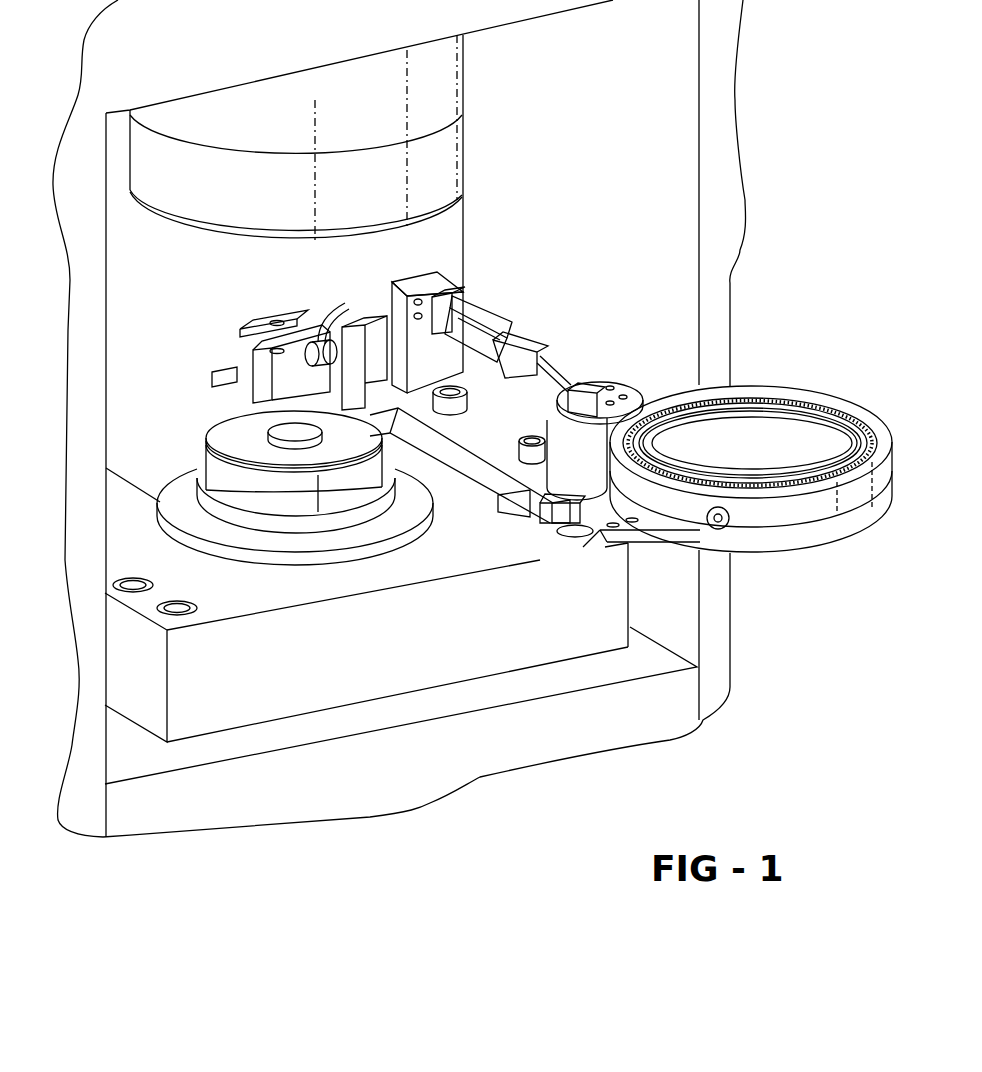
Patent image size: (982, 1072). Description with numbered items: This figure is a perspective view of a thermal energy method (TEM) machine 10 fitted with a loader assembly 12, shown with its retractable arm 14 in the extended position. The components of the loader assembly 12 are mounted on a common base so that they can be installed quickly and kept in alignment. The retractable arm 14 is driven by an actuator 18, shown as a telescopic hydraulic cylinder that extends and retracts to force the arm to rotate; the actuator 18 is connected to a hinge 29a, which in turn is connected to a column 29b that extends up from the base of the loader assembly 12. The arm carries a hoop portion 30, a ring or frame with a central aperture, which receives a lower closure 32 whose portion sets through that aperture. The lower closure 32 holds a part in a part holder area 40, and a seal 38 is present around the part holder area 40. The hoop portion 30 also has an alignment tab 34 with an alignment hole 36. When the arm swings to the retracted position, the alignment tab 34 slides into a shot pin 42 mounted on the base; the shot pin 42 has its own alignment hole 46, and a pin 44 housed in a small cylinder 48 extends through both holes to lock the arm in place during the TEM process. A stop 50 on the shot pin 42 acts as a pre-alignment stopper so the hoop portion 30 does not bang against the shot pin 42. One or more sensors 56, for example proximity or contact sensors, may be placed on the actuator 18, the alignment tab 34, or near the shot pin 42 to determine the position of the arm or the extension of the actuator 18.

The thermal energy method (TEM) machine 10 is at (822, 166).
The loader assembly 12 is at (459, 532).
The retractable arm 14 is at (587, 348).
The actuator 18 is at (500, 330).
The hinge 29a is at (455, 285).
The column 29b is at (423, 278).
The hoop portion 30 is at (753, 469).
The lower closure 32 is at (897, 413).
The alignment tab 34 is at (643, 531).
The alignment hole 36 is at (588, 545).
The seal 38 is at (855, 413).
The part holder area 40 is at (763, 452).
The shot pin 42 is at (260, 363).
The pin 44 is at (260, 332).
The alignment hole 46 is at (274, 321).
The small cylinder 48 is at (247, 408).
The stop 50 is at (321, 338).
The sensor 56 is at (212, 380).